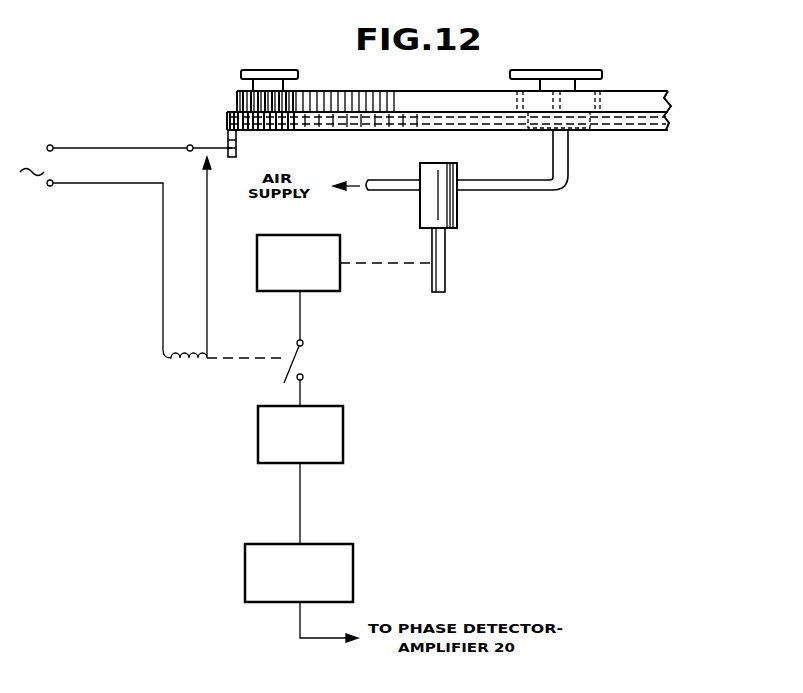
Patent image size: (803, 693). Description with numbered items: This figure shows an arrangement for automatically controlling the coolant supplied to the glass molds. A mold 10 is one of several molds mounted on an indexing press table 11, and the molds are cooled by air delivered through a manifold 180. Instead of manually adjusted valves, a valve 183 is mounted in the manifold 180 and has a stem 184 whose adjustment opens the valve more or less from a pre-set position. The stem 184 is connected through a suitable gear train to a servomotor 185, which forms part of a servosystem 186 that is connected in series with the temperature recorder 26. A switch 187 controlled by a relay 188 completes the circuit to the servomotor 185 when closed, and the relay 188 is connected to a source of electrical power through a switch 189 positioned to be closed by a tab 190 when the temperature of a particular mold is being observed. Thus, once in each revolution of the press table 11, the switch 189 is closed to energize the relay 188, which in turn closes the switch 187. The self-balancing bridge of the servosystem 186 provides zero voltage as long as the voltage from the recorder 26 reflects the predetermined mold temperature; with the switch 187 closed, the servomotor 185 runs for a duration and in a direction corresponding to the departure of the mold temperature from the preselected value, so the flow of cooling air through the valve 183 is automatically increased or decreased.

The mold 10 is at (263, 70).
The indexing press table 11 is at (411, 100).
The temperature recorder 26 is at (353, 568).
The manifold 180 is at (394, 178).
The valve 183 is at (457, 212).
The stem 184 is at (445, 250).
The servomotor 185 is at (270, 232).
The servosystem 186 is at (345, 415).
The switch 187 is at (290, 365).
The relay 188 is at (184, 363).
The switch 189 is at (212, 143).
The tab 190 is at (237, 135).